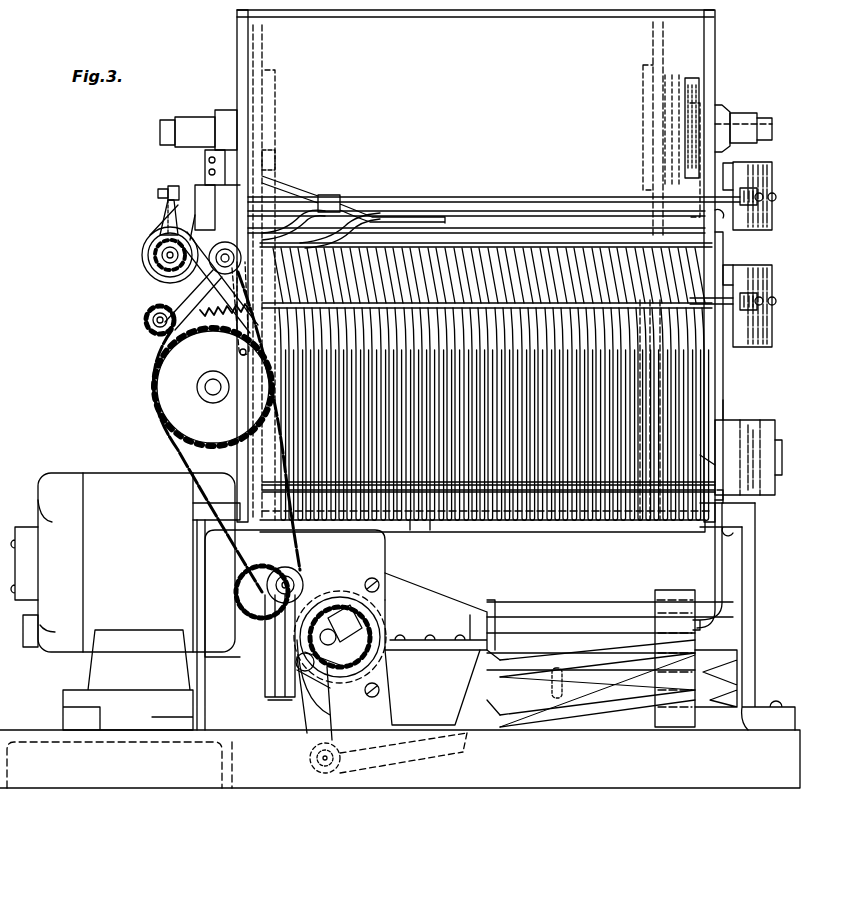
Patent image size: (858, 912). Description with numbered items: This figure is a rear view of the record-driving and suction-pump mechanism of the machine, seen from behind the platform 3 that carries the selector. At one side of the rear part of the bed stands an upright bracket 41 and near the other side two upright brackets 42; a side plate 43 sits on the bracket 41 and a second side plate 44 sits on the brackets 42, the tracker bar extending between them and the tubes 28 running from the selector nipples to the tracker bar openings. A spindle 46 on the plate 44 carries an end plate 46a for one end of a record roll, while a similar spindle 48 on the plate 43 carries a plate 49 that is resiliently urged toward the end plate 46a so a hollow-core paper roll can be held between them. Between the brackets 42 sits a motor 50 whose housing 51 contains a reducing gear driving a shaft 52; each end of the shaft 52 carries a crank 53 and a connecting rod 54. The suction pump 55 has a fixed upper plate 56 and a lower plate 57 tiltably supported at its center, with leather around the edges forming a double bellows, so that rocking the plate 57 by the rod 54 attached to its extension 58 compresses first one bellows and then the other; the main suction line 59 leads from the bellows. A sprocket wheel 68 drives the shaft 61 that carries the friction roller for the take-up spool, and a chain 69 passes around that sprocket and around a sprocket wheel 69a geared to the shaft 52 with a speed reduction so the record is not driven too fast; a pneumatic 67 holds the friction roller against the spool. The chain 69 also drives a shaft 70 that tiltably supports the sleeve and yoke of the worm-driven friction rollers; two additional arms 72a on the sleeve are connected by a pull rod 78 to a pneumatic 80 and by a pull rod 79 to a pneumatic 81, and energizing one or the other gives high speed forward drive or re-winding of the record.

The platform 3 is at (32, 731).
The tube 28 is at (560, 518).
The upright bracket 41 is at (755, 608).
The upright brackets 42 is at (205, 663).
The side plate 43 is at (715, 72).
The side plate 44 is at (237, 57).
The spindle 46 is at (160, 130).
The end plate 46a is at (268, 118).
The spindle 48 is at (773, 125).
The plate 49 is at (650, 121).
The motor 50 is at (123, 562).
The housing 51 is at (375, 546).
The shaft 52 is at (340, 620).
The crank 53 is at (365, 690).
The connecting rod 54 is at (325, 712).
The suction pump 55 is at (558, 727).
The fixed upper plate 56 is at (575, 682).
The lower plate 57 is at (618, 683).
The extension 58 is at (400, 760).
The main suction line 59 is at (715, 556).
The shaft 61 is at (213, 395).
The pneumatic 67 is at (768, 438).
The sprocket wheel 68 is at (168, 388).
The chain 69 is at (173, 453).
The sprocket wheel 69a is at (269, 609).
The shaft 70 is at (160, 256).
The arms 72a is at (160, 310).
The pull rod 78 is at (563, 197).
The pull rod 79 is at (688, 300).
The pneumatic 80 is at (768, 170).
The pneumatic 81 is at (765, 276).